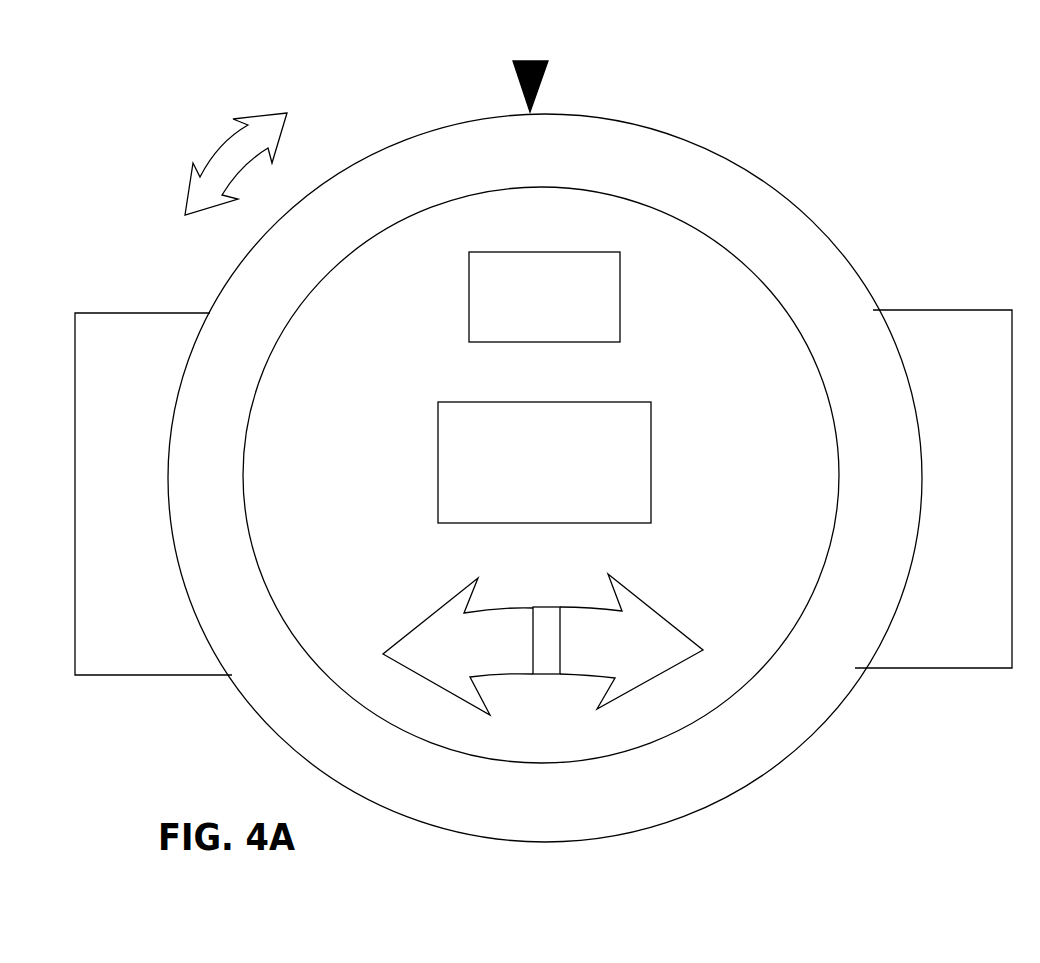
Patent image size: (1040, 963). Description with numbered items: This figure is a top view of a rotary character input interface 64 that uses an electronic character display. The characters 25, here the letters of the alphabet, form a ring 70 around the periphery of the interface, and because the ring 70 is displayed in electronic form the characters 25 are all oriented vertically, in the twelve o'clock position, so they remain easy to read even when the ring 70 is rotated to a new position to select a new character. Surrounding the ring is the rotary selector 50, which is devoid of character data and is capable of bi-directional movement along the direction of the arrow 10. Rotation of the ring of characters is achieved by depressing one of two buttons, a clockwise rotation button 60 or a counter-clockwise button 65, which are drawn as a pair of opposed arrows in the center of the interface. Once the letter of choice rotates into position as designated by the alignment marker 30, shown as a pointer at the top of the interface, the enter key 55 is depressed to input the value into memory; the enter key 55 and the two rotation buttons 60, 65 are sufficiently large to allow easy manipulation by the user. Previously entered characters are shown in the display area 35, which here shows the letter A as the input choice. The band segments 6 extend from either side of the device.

The wrist band 6 is at (120, 648).
The arrow 10 is at (223, 145).
The characters 25 is at (865, 285).
The alignment marker 30 is at (540, 92).
The display area 35 is at (544, 462).
The rotary selector 50 is at (670, 137).
The enter key 55 is at (478, 317).
The clockwise rotation button 60 is at (668, 638).
The rotary character input interface 64 is at (851, 55).
The counter-clockwise button 65 is at (427, 653).
The ring 70 is at (825, 258).